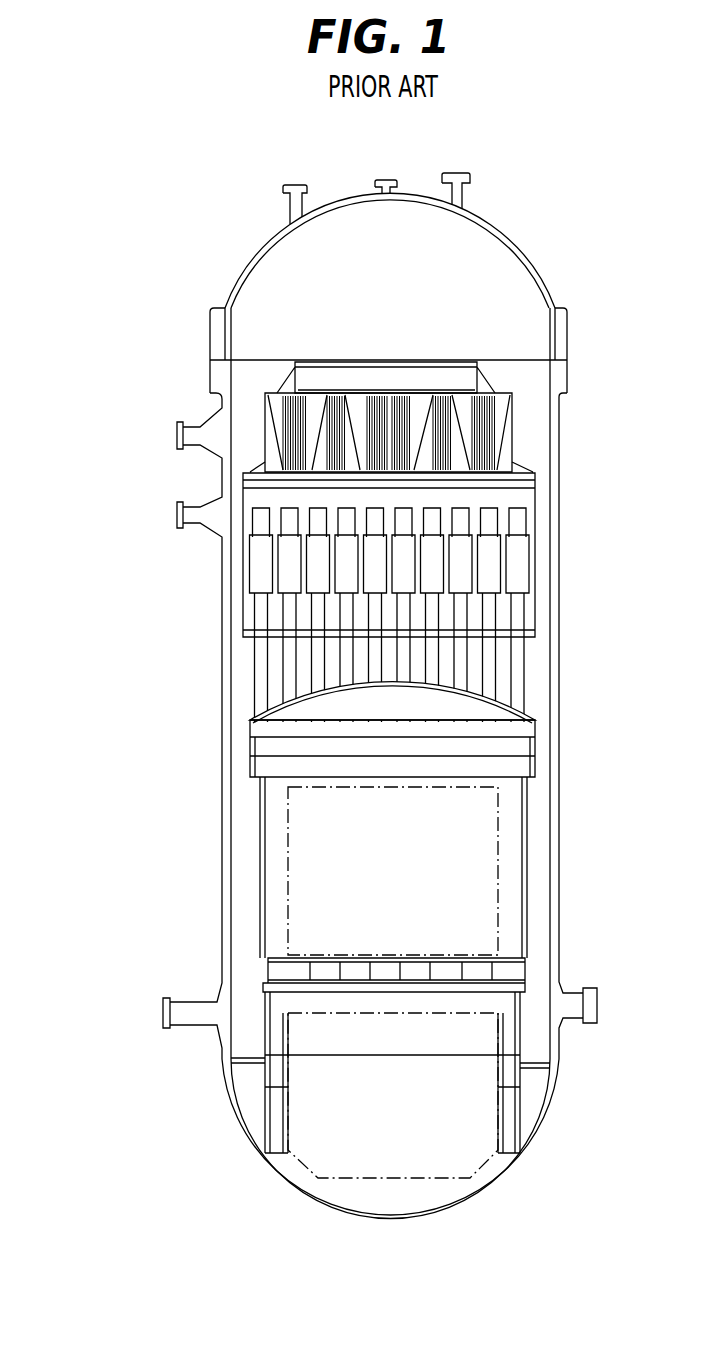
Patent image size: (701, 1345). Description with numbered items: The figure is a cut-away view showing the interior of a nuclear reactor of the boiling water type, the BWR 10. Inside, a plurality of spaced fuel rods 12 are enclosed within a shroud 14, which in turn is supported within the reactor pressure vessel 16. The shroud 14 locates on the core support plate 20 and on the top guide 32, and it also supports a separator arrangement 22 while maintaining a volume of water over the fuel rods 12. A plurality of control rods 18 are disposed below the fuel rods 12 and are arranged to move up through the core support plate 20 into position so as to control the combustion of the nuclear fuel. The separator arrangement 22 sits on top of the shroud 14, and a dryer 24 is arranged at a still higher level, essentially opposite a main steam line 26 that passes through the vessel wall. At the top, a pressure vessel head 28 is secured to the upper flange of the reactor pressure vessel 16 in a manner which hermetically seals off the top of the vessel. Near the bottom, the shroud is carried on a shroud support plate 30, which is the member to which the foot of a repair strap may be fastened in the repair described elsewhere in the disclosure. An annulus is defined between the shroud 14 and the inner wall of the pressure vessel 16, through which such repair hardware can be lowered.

The boiling water reactor 10 is at (173, 360).
The fuel rods 12 is at (313, 898).
The shroud 14 is at (258, 842).
The reactor pressure vessel 16 is at (223, 642).
The control rods 18 is at (320, 1127).
The core support plate 20 is at (290, 970).
The separator arrangement 22 is at (538, 628).
The dryer 24 is at (498, 457).
The main steam line 26 is at (183, 435).
The pressure vessel head 28 is at (240, 276).
The shroud support plate 30 is at (537, 1073).
The top guide 32 is at (510, 769).